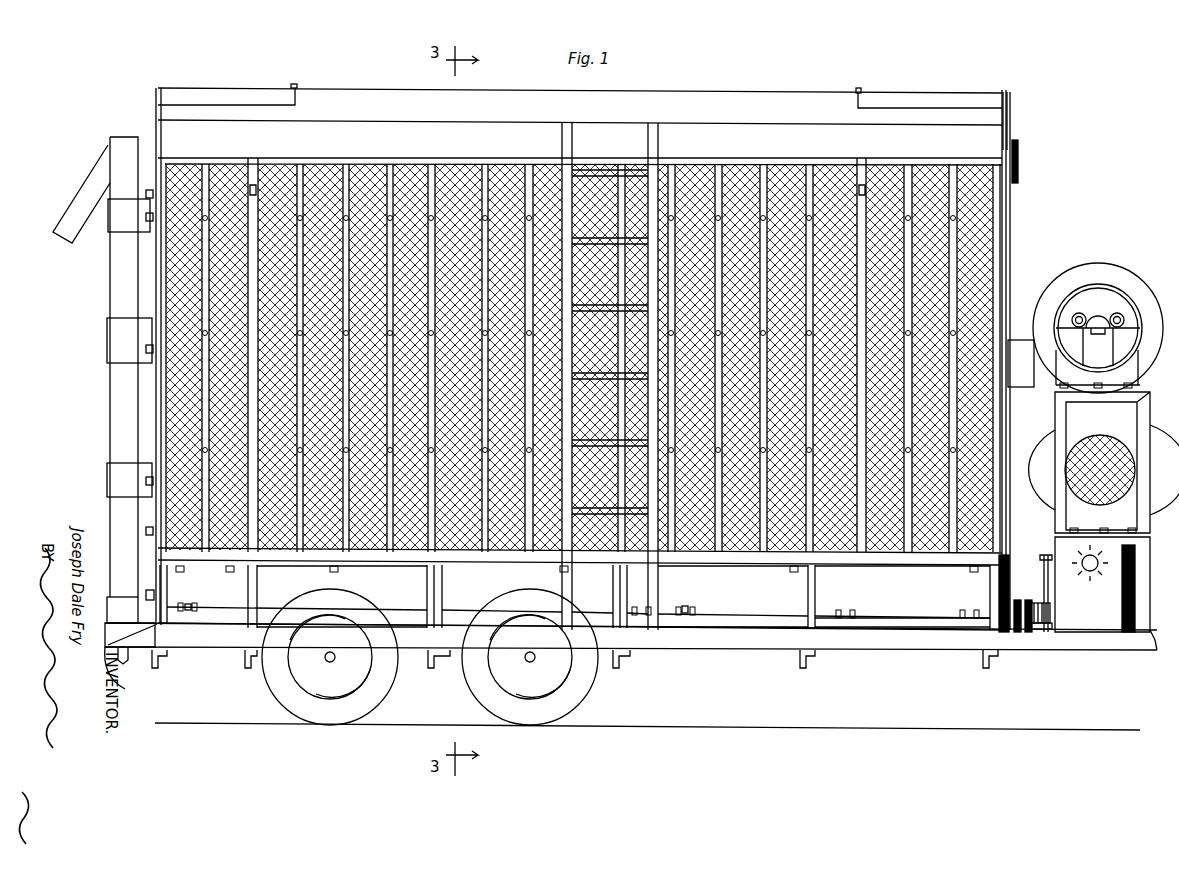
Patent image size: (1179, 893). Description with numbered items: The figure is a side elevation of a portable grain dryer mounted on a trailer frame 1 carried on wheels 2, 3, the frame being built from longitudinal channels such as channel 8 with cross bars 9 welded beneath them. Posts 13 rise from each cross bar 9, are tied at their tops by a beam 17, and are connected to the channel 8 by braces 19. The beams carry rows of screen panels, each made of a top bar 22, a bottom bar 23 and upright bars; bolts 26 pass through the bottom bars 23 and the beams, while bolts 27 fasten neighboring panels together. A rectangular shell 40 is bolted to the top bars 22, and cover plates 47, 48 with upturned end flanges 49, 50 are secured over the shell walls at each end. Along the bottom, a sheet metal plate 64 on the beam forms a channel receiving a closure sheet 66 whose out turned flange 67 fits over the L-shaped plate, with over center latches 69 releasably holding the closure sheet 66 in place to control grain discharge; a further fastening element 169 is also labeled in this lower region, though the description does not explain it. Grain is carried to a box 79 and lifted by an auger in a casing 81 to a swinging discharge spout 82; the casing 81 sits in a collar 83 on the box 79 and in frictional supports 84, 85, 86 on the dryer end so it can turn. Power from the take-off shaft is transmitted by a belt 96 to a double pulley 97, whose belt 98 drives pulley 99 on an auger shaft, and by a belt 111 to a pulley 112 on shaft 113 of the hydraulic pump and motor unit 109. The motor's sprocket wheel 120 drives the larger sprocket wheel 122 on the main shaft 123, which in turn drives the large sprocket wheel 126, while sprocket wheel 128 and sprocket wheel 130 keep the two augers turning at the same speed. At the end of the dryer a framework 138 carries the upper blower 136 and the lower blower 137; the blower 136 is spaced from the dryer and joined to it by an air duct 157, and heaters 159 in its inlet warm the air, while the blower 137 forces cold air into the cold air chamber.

The trailer frame 1 is at (709, 661).
The wheel 2 is at (278, 687).
The wheel 3 is at (472, 688).
The channel 8 is at (860, 648).
The cross bar 9 is at (160, 655).
The post 13 is at (165, 582).
The beam 17 is at (695, 568).
The brace 19 is at (165, 598).
The top bar 22 is at (196, 162).
The bottom bar 23 is at (298, 555).
The bolt 26 is at (390, 565).
The bolt 27 is at (262, 164).
The rectangular shell 40 is at (488, 100).
The cover plate 47 is at (226, 80).
The cover plate 48 is at (910, 98).
The upturned end flange 49 is at (298, 84).
The upturned end flange 50 is at (864, 84).
The sheet metal plate 64 is at (945, 568).
The closure sheet 66 is at (872, 596).
The out turned flange 67 is at (923, 615).
The over center latch 69 is at (686, 606).
The box 79 is at (112, 670).
The casing 81 is at (110, 417).
The discharge spout 82 is at (68, 210).
The collar 83 is at (107, 597).
The support 84 is at (108, 478).
The support 85 is at (108, 342).
The support 86 is at (112, 226).
The belt 96 is at (1010, 245).
The pulley 97 is at (1018, 176).
The belt 98 is at (1008, 88).
The pulley 99 is at (1012, 118).
The hydraulic pump and motor unit 109 is at (1102, 584).
The belt 111 is at (1050, 604).
The pulley 112 is at (1085, 570).
The shaft 113 is at (1082, 556).
The sprocket wheel 120 is at (1126, 545).
The sprocket wheel 122 is at (1128, 632).
The main shaft 123 is at (1052, 624).
The sprocket wheel 126 is at (1040, 600).
The sprocket wheel 128 is at (1008, 630).
The sprocket wheel 130 is at (1020, 600).
The blower 136 is at (1080, 270).
The blower 137 is at (1050, 448).
The framework 138 is at (1047, 415).
The air duct 157 is at (1024, 363).
The heater 159 is at (1122, 320).
The bolt 169 is at (196, 603).